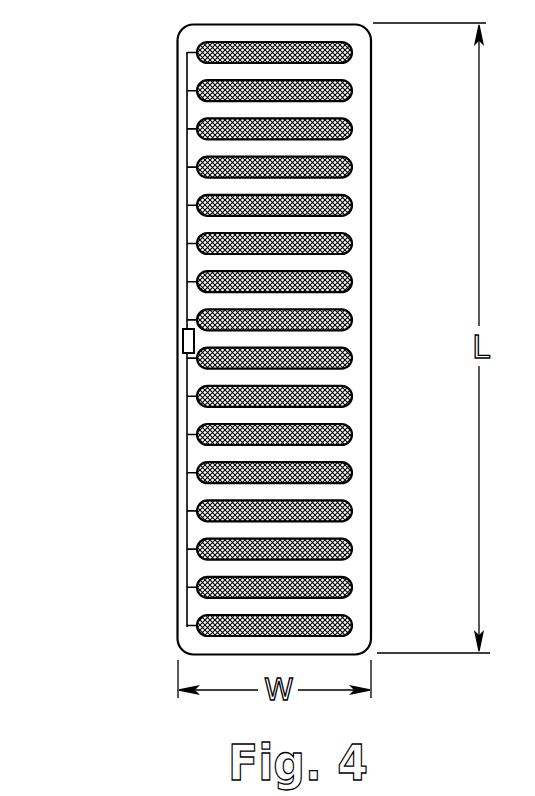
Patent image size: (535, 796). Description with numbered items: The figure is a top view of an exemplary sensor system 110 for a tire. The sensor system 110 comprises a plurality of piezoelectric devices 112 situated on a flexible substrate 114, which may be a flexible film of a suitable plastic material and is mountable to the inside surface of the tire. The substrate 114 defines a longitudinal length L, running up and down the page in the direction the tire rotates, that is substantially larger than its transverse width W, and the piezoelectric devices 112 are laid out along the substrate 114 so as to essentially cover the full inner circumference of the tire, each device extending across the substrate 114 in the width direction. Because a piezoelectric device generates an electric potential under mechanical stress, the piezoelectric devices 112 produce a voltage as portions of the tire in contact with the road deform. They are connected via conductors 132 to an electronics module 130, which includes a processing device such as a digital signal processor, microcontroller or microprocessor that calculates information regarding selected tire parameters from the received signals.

The sensor system 110 is at (100, 92).
The piezoelectric devices 112 is at (347, 61).
The flexible substrate 114 is at (178, 51).
The electronics module 130 is at (183, 341).
The conductors 132 is at (187, 186).